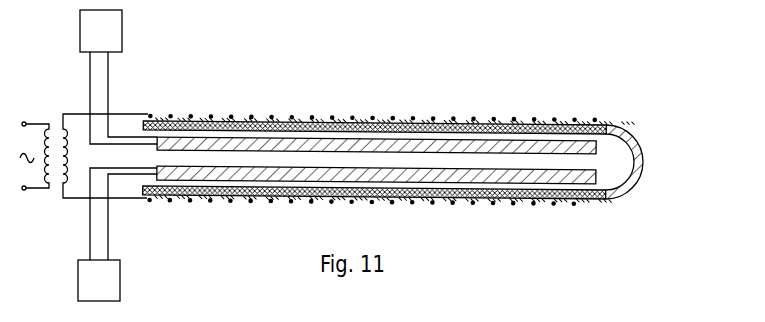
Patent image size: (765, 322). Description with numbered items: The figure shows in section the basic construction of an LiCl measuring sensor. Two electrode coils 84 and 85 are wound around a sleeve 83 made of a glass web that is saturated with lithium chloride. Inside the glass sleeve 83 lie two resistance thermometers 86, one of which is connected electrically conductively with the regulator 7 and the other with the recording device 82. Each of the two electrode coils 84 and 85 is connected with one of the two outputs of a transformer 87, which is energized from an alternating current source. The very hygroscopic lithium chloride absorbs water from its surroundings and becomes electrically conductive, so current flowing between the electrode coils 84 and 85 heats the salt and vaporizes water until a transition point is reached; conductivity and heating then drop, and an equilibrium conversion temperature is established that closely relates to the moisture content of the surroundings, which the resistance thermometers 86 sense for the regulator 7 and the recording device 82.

The regulator 7 is at (120, 283).
The recording device 82 is at (122, 33).
The sleeve 83 is at (626, 119).
The electrode coil 84 is at (150, 113).
The electrode coil 85 is at (172, 114).
The resistance thermometers 86 is at (200, 148).
The transformer 87 is at (61, 122).